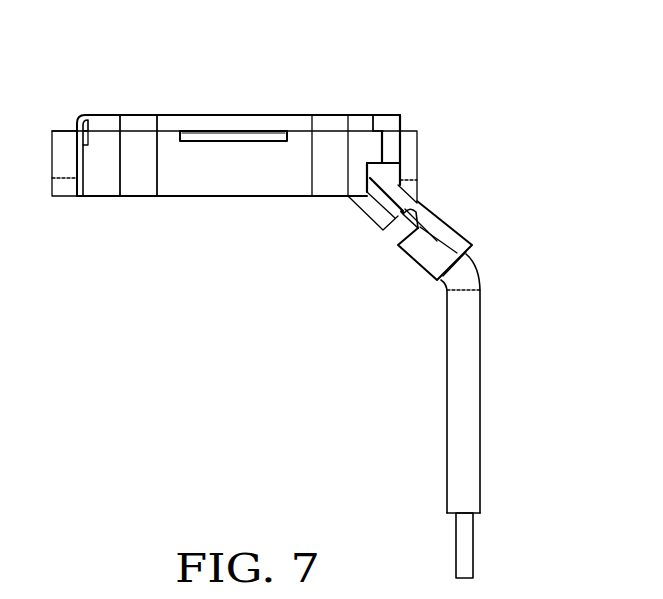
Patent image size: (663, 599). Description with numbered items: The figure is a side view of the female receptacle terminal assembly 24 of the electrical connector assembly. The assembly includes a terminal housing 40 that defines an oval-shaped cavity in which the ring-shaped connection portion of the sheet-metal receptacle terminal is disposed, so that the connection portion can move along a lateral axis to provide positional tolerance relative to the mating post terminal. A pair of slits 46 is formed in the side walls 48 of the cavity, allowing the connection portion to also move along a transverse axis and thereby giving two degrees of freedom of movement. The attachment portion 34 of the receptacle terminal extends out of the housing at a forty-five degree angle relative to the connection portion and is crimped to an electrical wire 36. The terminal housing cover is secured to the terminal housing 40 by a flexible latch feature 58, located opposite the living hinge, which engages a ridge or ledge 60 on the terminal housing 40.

The receptacle terminal assembly 24 is at (153, 57).
The attachment portion 34 is at (457, 242).
The electrical wire 36 is at (473, 413).
The terminal housing 40 is at (330, 125).
The slits 46 is at (235, 141).
The side walls 48 is at (167, 183).
The flexible latch feature 58 is at (385, 122).
The ledge 60 is at (423, 160).